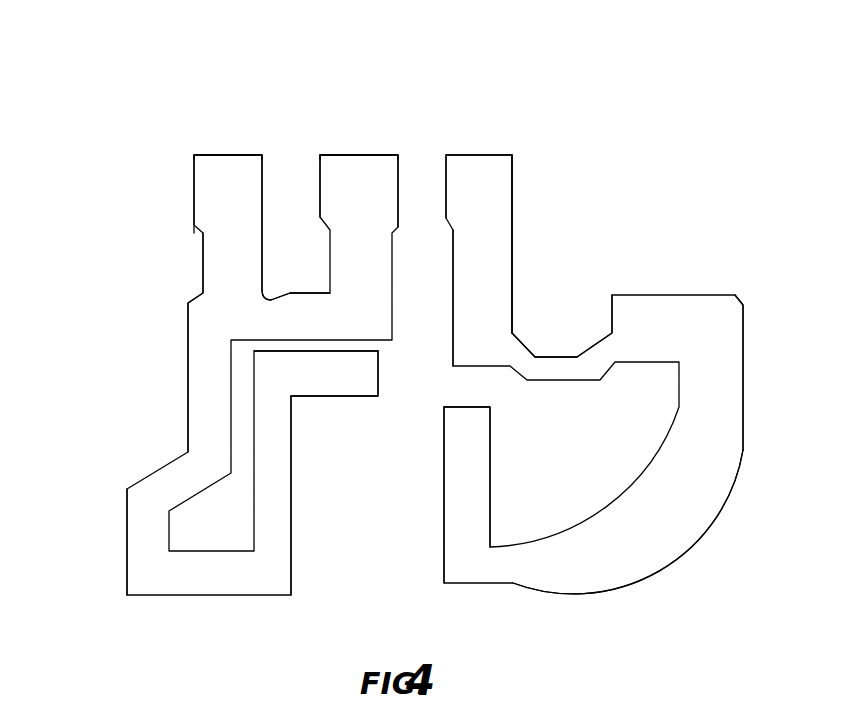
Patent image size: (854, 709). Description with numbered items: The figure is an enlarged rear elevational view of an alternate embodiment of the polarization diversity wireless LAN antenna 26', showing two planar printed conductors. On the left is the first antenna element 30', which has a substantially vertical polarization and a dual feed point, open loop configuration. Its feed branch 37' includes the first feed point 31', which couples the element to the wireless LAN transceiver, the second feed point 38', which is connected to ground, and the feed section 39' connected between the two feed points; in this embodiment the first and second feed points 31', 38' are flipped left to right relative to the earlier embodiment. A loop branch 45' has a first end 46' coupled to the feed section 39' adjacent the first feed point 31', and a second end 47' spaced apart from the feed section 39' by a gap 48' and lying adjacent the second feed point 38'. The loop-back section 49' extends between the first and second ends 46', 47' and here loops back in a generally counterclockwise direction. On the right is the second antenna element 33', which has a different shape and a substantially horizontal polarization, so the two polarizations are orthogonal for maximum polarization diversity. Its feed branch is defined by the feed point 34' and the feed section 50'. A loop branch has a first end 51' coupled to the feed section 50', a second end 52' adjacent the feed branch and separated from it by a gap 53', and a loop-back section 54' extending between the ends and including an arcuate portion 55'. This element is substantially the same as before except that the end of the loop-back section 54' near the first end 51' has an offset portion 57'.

The polarization diversity wireless LAN antenna 26' is at (651, 80).
The first antenna element 30' is at (252, 415).
The first feed point 31' is at (227, 191).
The second antenna element 33' is at (613, 374).
The feed point 34' is at (480, 212).
The feed branch 37' is at (298, 88).
The second feed point 38' is at (359, 159).
The feed section 39' is at (296, 266).
The loop branch 45' is at (69, 468).
The first end 46' is at (160, 342).
The second end 47' is at (337, 404).
The gap 48' is at (341, 381).
The loop-back section 49' is at (330, 495).
The feed section 50' is at (514, 260).
The first end 51' is at (549, 318).
The second end 52' is at (506, 470).
The gap 53' is at (424, 485).
The loop-back section 54' is at (777, 372).
The arcuate portion 55' is at (628, 520).
The offset portion 57' is at (613, 289).